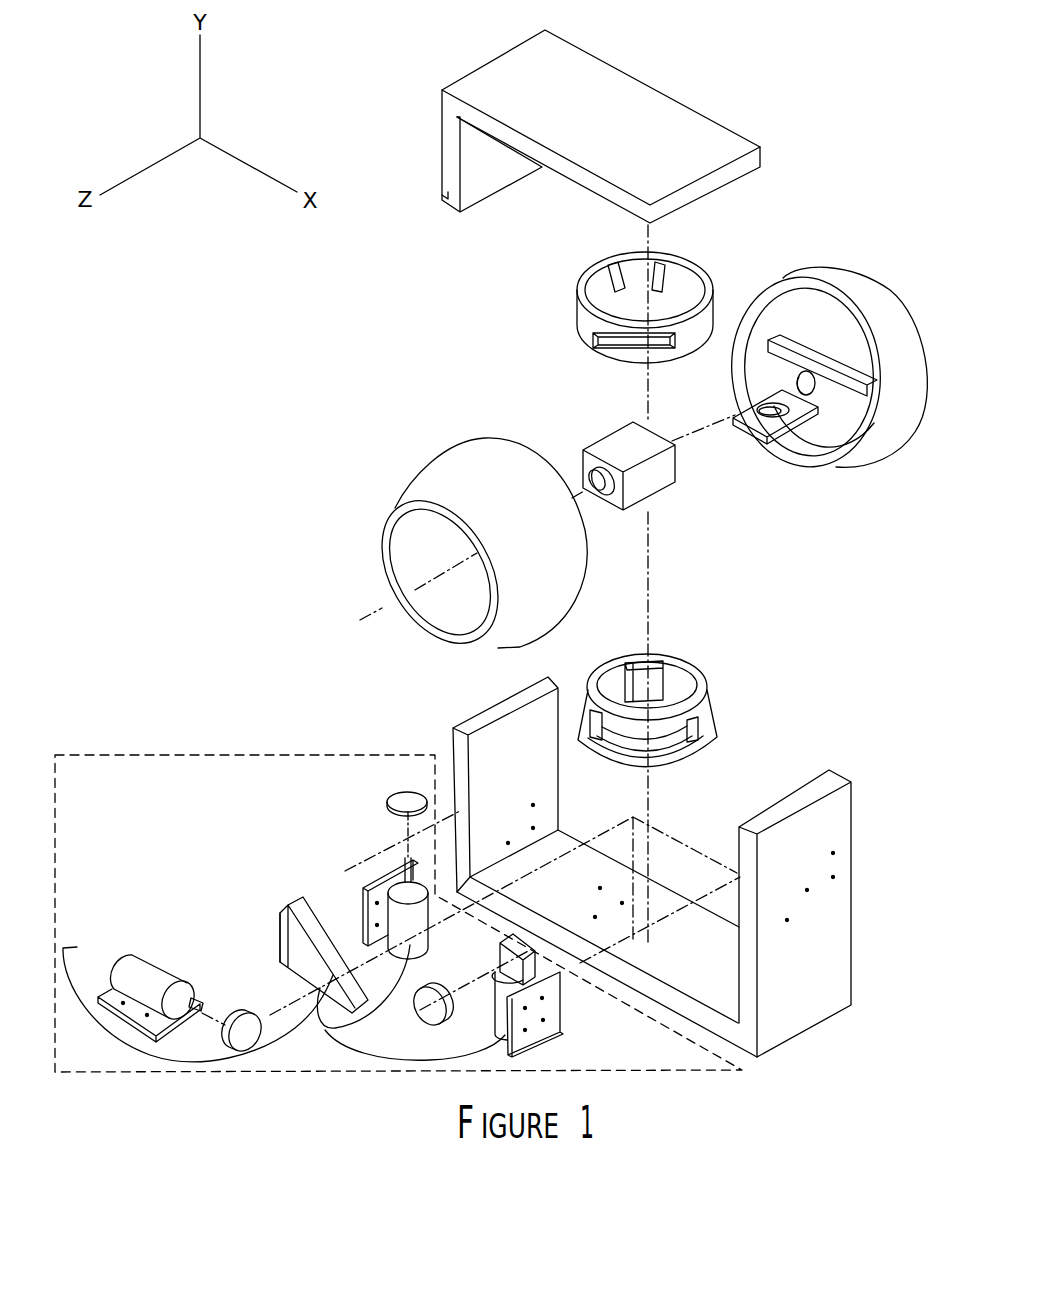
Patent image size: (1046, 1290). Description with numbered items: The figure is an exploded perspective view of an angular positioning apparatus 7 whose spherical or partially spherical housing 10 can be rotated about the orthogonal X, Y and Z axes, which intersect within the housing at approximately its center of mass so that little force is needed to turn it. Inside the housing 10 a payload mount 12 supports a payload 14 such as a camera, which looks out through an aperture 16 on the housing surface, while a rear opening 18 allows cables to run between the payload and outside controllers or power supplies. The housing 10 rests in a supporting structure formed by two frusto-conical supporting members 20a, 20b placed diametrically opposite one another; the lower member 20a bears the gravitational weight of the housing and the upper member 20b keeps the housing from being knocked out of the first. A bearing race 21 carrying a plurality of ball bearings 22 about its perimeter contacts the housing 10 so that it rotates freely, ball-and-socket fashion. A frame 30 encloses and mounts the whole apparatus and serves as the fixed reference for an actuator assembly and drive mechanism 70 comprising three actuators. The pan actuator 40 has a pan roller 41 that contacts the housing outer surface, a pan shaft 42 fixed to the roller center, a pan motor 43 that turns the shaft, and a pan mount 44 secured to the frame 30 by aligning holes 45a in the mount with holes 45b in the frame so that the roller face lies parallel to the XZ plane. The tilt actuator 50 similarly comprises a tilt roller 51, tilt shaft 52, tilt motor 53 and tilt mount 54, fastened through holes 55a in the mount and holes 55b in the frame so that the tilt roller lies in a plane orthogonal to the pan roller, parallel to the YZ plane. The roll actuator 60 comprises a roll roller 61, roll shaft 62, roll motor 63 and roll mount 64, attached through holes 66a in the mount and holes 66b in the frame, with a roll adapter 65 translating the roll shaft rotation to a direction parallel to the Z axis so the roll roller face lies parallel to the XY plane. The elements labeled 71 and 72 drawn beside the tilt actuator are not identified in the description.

The angular positioning apparatus 7 is at (320, 293).
The housing 10 is at (388, 562).
The payload mount 12 is at (815, 410).
The payload 14 is at (602, 438).
The aperture 16 is at (428, 620).
The rear opening 18 is at (800, 307).
The supporting member 20a is at (712, 718).
The supporting member 20b is at (580, 328).
The bearing race 21 is at (712, 674).
The ball bearings 22 is at (700, 676).
The frame 30 is at (498, 192).
The pan actuator 40 is at (362, 858).
The pan roller 41 is at (403, 802).
The pan shaft 42 is at (407, 860).
The pan motor 43 is at (427, 942).
The pan mount 44 is at (368, 932).
The holes in the pan mount 45a is at (376, 903).
The holes in the frame 45b is at (508, 822).
The tilt actuator 50 is at (161, 945).
The tilt roller 51 is at (240, 1027).
The tilt shaft 52 is at (203, 1003).
The tilt motor 53 is at (128, 967).
The tilt mount 54 is at (156, 1035).
The holes in the tilt mount 55a is at (125, 1004).
The holes in the frame 55b is at (573, 905).
The roll actuator 60 is at (586, 1026).
The roll roller 61 is at (425, 1015).
The roll shaft 62 is at (497, 973).
The roll motor 63 is at (500, 1033).
The roll mount 64 is at (527, 1030).
The roll adapter 65 is at (500, 952).
The holes in the roll mount 66a is at (507, 1054).
The holes in the frame 66b is at (808, 870).
The actuator assembly and drive mechanism 70 is at (742, 1075).
The prism 71 is at (266, 975).
The mirror 72 is at (280, 920).